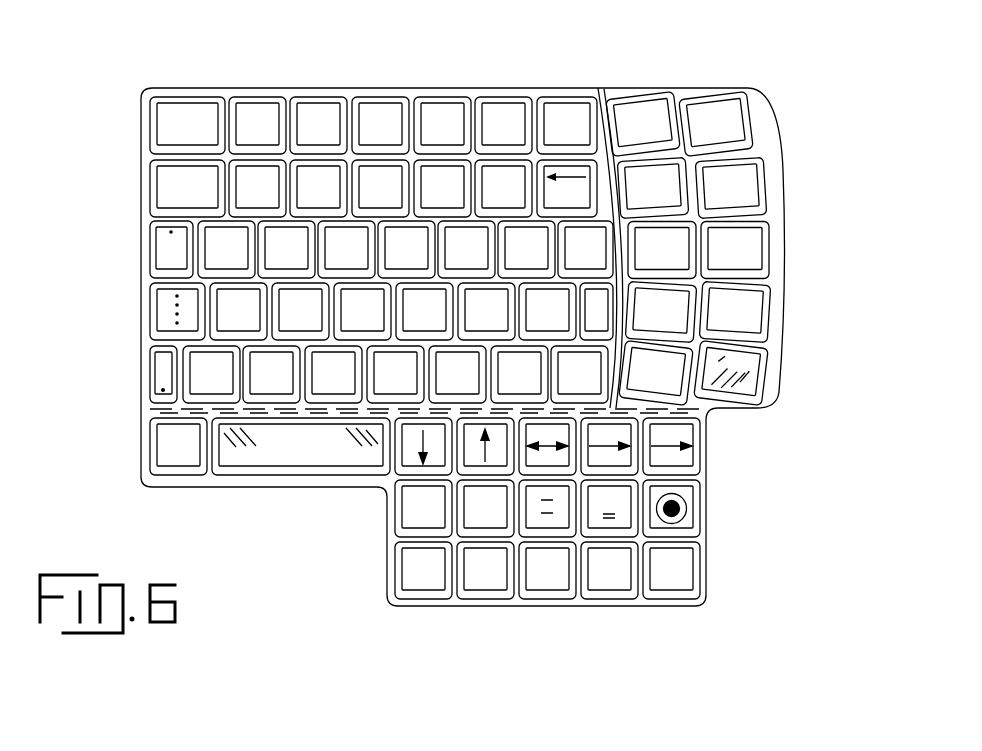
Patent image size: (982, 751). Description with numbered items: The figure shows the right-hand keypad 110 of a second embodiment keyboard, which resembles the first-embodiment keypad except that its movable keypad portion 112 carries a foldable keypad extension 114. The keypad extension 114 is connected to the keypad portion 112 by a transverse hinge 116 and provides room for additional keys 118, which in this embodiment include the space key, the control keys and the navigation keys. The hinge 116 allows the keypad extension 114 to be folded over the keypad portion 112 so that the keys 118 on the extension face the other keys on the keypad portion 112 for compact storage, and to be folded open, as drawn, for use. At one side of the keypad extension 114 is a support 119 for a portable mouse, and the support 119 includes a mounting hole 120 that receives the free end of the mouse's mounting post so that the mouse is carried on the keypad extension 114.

The right-hand keypad 110 is at (136, 262).
The movable keypad portion 112 is at (250, 84).
The foldable keypad extension 114 is at (707, 509).
The transverse hinge 116 is at (707, 430).
The keypad extension keys 118 is at (522, 614).
The mouse support 119 is at (703, 522).
The mounting hole 120 is at (676, 521).